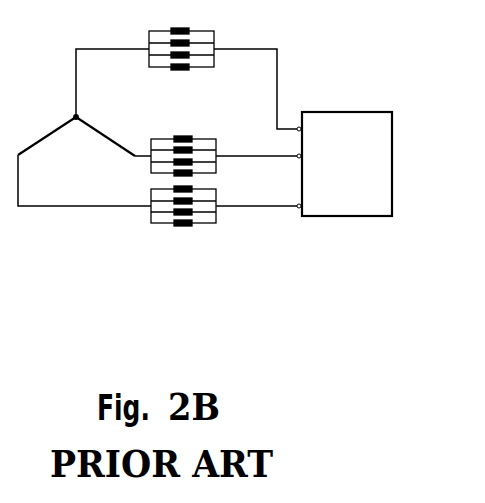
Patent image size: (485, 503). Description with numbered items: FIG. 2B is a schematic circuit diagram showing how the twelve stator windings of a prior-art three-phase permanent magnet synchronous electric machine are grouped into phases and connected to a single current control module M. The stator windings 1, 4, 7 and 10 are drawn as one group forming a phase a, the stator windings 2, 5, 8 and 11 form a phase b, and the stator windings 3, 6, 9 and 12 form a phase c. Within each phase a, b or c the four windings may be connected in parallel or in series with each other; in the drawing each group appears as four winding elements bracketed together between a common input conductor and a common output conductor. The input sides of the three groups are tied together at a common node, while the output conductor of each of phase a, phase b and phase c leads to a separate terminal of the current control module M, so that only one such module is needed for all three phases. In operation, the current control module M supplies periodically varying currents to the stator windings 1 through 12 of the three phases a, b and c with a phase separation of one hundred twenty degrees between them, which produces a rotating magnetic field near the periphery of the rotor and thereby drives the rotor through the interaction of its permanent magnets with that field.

The stator winding 1 is at (175, 29).
The stator winding 2 is at (177, 137).
The stator winding 3 is at (177, 187).
The stator winding 4 is at (175, 41).
The stator winding 5 is at (177, 148).
The stator winding 6 is at (177, 199).
The stator winding 7 is at (175, 53).
The stator winding 8 is at (177, 160).
The stator winding 9 is at (177, 210).
The stator winding 10 is at (174, 65).
The stator winding 11 is at (176, 171).
The stator winding 12 is at (176, 221).
The phase a is at (198, 47).
The phase b is at (200, 154).
The phase c is at (200, 204).
The current control module M is at (347, 164).